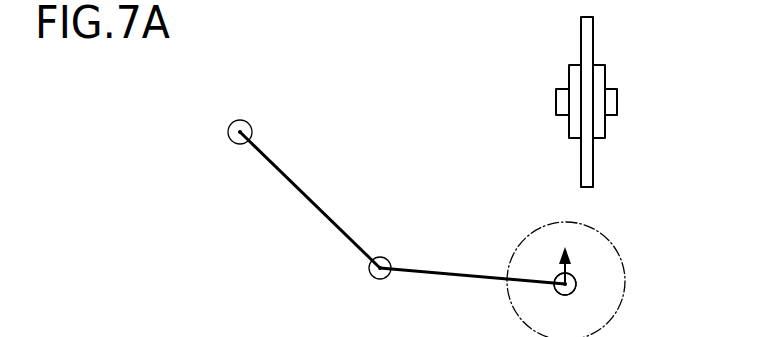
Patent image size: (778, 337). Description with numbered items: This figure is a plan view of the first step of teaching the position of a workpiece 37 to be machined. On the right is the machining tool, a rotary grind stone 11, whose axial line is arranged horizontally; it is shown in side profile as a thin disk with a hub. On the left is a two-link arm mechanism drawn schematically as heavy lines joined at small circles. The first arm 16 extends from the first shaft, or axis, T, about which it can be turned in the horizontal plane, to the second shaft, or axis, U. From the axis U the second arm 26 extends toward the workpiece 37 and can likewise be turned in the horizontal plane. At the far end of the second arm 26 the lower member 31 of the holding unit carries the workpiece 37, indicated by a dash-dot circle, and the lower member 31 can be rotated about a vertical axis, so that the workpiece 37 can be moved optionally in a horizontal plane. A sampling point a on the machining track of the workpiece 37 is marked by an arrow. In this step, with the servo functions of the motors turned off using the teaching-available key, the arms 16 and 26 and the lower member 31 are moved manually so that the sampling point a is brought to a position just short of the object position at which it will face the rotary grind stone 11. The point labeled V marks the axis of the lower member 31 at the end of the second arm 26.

The rotary grind stone 11 is at (594, 40).
The first arm 16 is at (287, 180).
The second arm 26 is at (472, 239).
The workpiece 37 is at (627, 285).
The lower member 31 is at (583, 290).
The sampling point a is at (578, 220).
The first shaft (axis) T is at (240, 132).
The second shaft (axis) U is at (374, 274).
The point V is at (556, 292).